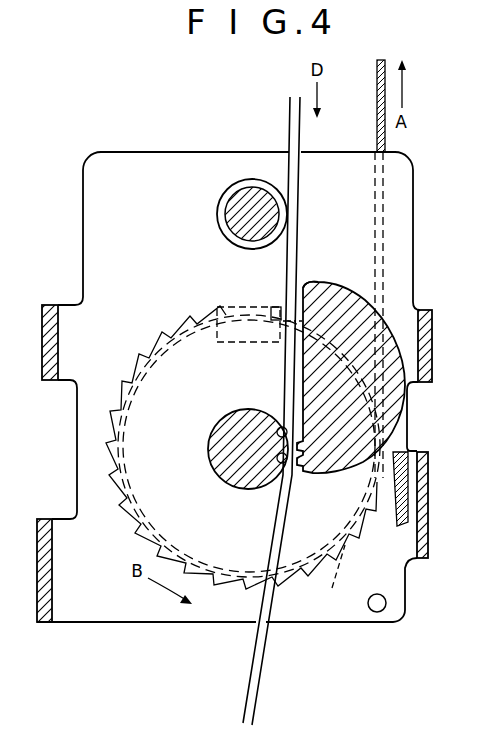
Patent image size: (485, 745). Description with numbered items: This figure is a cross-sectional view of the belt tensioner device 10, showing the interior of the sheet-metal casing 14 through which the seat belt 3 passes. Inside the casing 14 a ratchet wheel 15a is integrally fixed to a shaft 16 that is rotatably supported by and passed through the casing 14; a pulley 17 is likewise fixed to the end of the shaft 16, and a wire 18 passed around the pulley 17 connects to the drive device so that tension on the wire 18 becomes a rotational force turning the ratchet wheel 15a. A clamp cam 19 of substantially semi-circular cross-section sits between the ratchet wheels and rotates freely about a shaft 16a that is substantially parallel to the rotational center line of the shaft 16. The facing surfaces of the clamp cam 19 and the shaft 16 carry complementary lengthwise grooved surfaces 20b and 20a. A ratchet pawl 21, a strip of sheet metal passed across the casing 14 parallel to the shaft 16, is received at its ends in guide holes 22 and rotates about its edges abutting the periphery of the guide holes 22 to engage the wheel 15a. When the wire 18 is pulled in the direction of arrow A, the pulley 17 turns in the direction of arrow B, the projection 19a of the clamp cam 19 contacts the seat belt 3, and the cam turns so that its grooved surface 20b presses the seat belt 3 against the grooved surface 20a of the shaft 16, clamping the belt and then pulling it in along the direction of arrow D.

The seat belt 3 is at (300, 142).
The tensioner device 10 is at (66, 198).
The casing 14 is at (413, 276).
The ratchet wheel 15a is at (150, 516).
The shaft 16 is at (212, 448).
The shaft 16a is at (293, 367).
The pulley 17 is at (328, 576).
The wire 18 is at (386, 152).
The clamp cam 19 is at (348, 290).
The projection 19a is at (310, 286).
The grooved surface 20a is at (279, 428).
The grooved surface 20b is at (290, 470).
The ratchet pawl 21 is at (410, 450).
The guide hole 22 is at (394, 505).